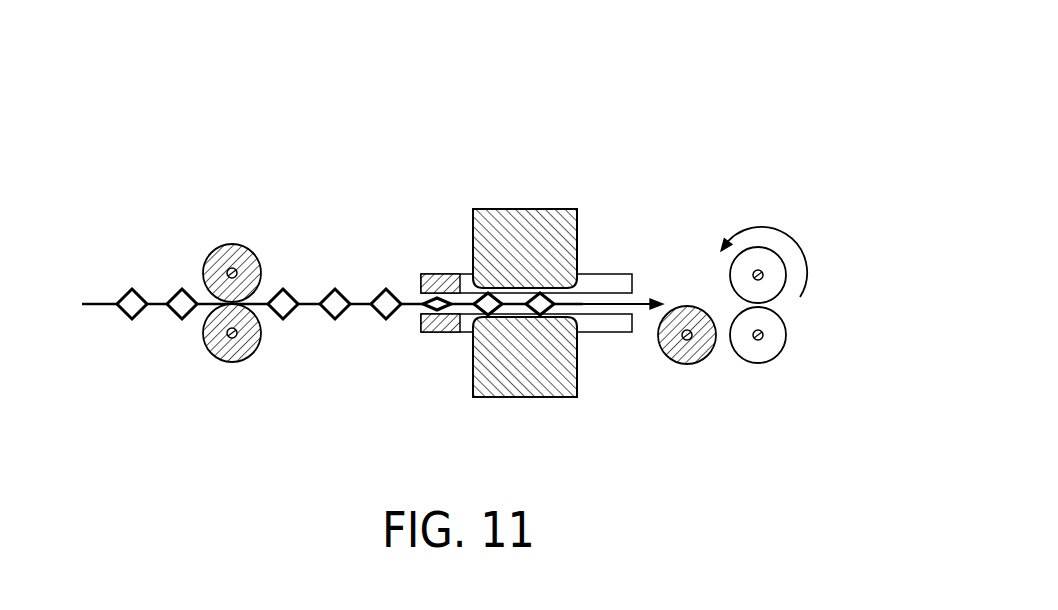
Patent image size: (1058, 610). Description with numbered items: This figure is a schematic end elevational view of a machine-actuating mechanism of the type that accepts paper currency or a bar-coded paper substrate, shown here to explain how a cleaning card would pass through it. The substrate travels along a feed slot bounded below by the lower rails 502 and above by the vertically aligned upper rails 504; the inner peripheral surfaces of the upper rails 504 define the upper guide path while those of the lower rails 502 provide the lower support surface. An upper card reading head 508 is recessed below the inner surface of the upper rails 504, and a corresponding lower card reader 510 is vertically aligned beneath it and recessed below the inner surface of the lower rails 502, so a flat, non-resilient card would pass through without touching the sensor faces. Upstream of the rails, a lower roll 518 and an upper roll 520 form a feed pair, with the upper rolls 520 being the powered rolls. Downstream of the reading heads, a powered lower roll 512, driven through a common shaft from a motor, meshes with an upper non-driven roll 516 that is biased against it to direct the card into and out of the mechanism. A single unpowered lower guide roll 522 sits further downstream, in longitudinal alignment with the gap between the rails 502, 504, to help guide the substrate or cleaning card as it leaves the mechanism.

The lower rails 502 is at (608, 323).
The upper rails 504 is at (612, 278).
The upper card reading heads 508 is at (542, 218).
The lower card readers 510 is at (557, 380).
The lower rolls 512 is at (775, 340).
The upper non-driven roll 516 is at (775, 280).
The lower rolls 518 is at (246, 344).
The upper rolls 520 is at (247, 256).
The lower guide roll 522 is at (683, 357).